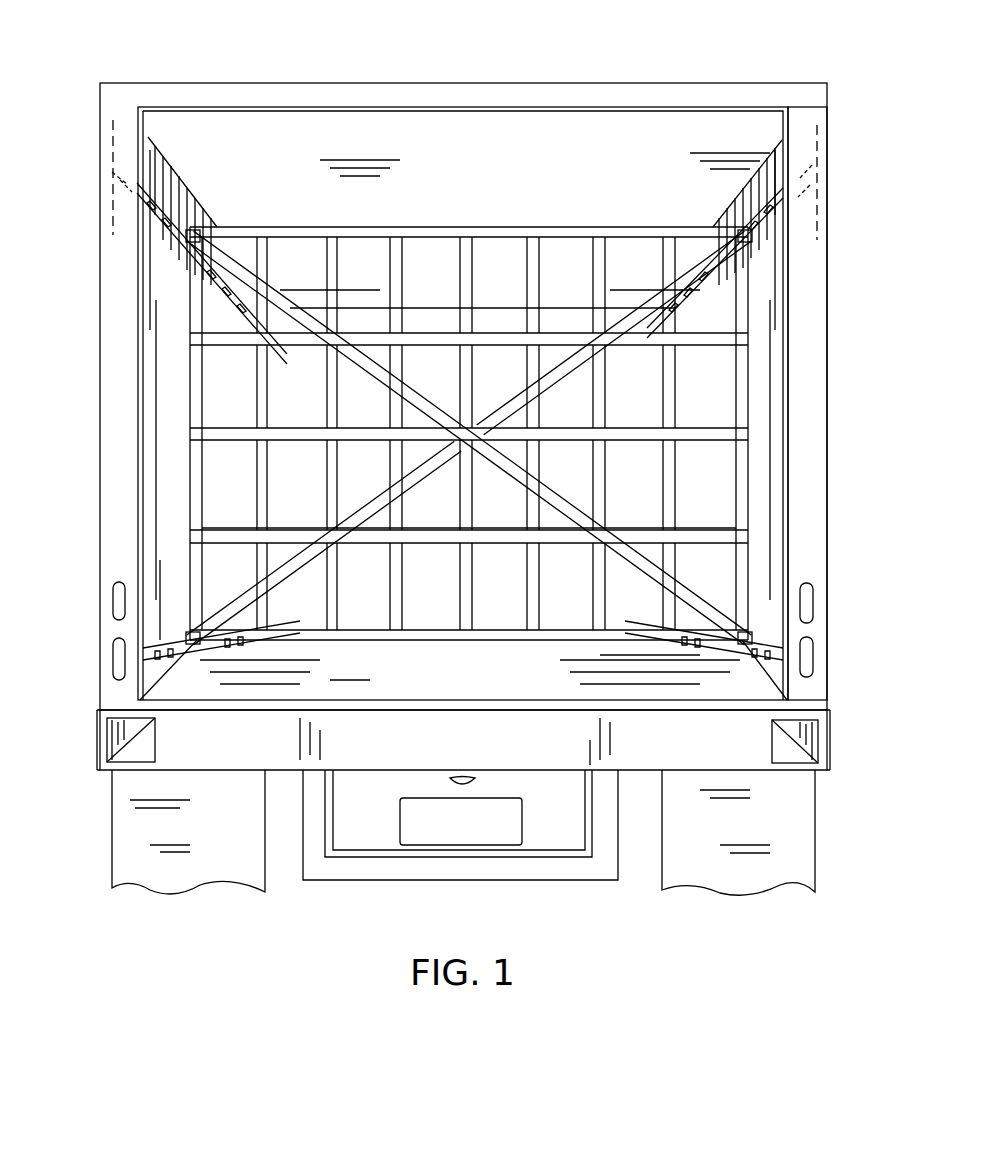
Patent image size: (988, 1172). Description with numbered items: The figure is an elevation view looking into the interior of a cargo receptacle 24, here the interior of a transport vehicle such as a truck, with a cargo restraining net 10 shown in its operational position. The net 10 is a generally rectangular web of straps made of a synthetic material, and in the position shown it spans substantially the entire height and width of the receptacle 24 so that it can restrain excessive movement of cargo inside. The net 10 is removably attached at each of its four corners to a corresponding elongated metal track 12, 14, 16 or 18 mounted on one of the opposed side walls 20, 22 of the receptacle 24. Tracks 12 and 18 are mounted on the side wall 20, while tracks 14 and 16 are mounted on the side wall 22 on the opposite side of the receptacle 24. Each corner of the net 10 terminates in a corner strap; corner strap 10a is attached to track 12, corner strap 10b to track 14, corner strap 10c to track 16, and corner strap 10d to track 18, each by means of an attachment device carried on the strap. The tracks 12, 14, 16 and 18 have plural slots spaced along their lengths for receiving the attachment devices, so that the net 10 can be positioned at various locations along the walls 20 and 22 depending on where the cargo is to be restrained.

The cargo restraining net 10 is at (490, 225).
The corner strap 10a is at (182, 630).
The corner strap 10b is at (745, 637).
The corner strap 10c is at (745, 232).
The corner strap 10d is at (196, 236).
The track 12 is at (180, 653).
The track 14 is at (752, 630).
The track 16 is at (786, 268).
The track 18 is at (162, 214).
The side wall 20 is at (152, 402).
The side wall 22 is at (760, 403).
The cargo receptacle 24 is at (620, 85).